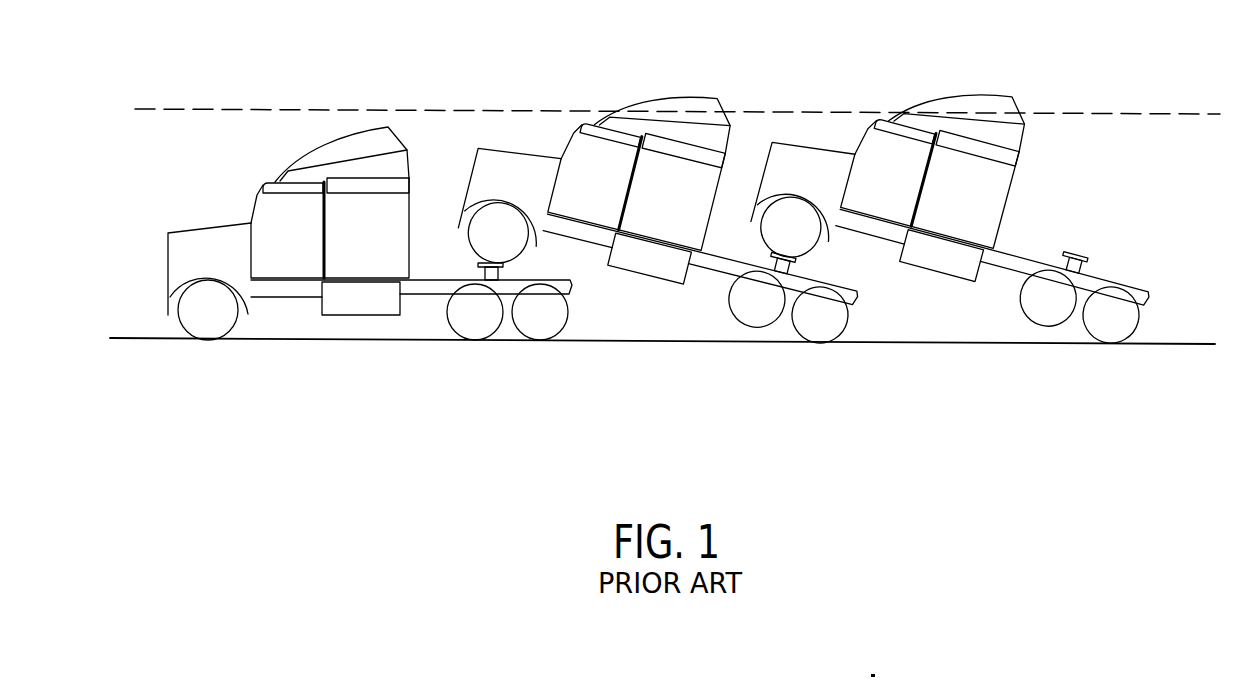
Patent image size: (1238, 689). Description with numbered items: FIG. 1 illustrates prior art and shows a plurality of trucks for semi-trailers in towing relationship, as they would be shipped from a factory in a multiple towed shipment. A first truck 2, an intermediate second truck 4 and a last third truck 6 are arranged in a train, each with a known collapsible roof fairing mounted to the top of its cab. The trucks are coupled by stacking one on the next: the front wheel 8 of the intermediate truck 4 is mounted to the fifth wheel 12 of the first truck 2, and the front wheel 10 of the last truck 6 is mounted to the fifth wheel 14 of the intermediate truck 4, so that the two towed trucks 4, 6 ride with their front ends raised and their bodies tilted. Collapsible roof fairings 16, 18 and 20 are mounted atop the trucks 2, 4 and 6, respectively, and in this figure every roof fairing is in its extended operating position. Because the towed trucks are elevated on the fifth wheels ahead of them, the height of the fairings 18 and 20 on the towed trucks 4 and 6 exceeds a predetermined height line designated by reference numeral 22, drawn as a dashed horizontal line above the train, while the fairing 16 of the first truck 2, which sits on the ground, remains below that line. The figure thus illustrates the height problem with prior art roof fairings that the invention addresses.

The first truck 2 is at (378, 265).
The second truck 4 is at (653, 221).
The third truck 6 is at (944, 221).
The front wheel 8 is at (473, 256).
The front wheel 10 is at (772, 255).
The fifth wheel 12 is at (505, 263).
The fifth wheel 14 is at (803, 260).
The collapsible roof fairing 16 is at (300, 153).
The collapsible roof fairing 18 is at (611, 91).
The collapsible roof fairing 20 is at (953, 93).
The predetermined height line 22 is at (1100, 110).